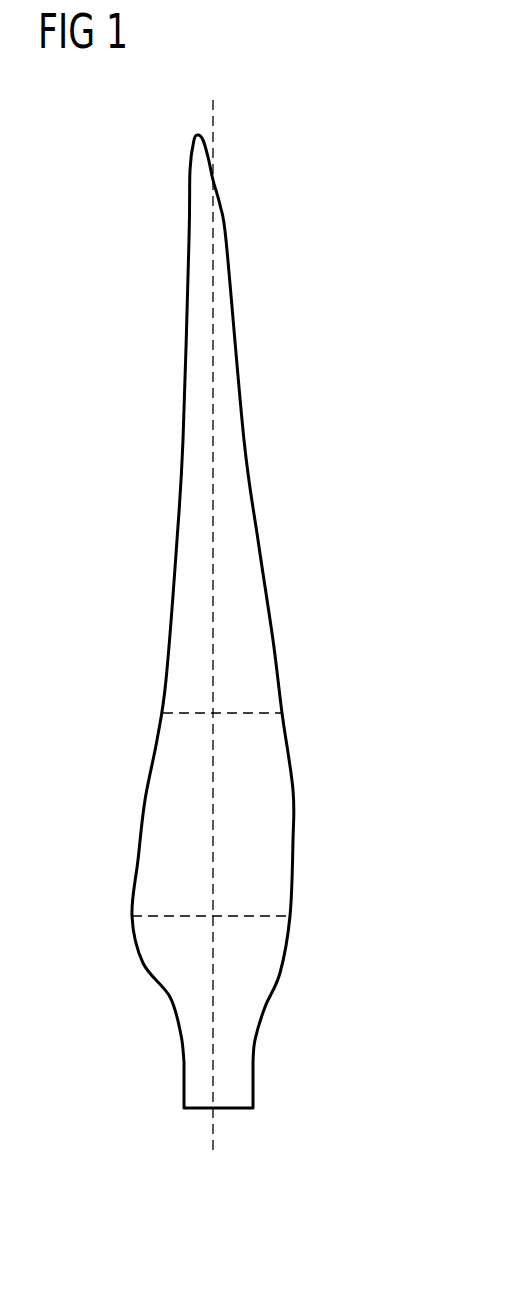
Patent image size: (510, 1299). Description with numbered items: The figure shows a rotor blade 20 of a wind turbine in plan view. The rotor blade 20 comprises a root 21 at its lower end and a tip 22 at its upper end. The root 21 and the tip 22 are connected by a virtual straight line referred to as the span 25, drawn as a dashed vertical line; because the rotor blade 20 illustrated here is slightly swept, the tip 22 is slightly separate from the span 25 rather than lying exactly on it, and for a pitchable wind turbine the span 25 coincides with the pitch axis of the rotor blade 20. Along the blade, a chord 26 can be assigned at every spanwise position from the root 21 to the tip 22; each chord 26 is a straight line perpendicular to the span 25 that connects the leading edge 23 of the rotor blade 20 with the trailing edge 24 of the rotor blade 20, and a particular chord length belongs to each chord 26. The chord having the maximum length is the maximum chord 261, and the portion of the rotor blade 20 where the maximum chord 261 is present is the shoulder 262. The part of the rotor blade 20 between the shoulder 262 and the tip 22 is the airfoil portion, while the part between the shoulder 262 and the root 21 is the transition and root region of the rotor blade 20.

The rotor blade 20 is at (277, 540).
The root 21 is at (237, 1108).
The tip 22 is at (197, 135).
The leading edge 23 is at (293, 788).
The trailing edge 24 is at (145, 800).
The span 25 is at (213, 1136).
The chord 26 is at (250, 713).
The maximum chord 261 is at (268, 916).
The shoulder 262 is at (132, 916).